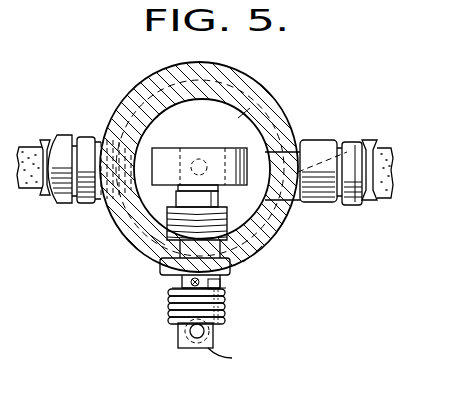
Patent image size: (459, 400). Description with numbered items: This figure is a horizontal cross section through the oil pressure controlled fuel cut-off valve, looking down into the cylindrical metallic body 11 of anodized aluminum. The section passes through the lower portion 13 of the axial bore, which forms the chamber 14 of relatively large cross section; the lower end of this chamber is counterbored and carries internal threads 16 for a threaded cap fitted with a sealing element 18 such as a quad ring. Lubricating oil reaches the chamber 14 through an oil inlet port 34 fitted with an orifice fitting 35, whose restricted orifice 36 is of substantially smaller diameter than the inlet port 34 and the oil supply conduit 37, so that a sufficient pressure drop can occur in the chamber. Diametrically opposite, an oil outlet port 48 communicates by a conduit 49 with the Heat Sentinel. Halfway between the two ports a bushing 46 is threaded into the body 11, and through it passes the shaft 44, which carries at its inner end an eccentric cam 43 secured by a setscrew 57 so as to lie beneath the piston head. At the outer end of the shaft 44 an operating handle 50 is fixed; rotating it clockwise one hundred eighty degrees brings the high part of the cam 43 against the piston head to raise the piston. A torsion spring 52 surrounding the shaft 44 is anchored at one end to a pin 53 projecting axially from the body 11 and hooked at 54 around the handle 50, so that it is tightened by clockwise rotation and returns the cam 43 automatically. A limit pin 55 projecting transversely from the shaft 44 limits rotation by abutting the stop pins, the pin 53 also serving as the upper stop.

The cylindrical metallic body 11 is at (139, 83).
The lower portion of the bore 13 is at (200, 100).
The chamber 14 is at (215, 112).
The internal threads 16 is at (273, 243).
The sealing element 18 is at (277, 229).
The oil inlet port 34 is at (288, 124).
The orifice fitting 35 is at (318, 148).
The restricted orifice 36 is at (348, 148).
The oil supply conduit 37 is at (387, 200).
The eccentric cam 43 is at (172, 160).
The shaft 44 is at (182, 281).
The bushing 46 is at (168, 222).
The oil outlet port 48 is at (122, 113).
The conduit 49 is at (42, 147).
The operating handle 50 is at (178, 334).
The torsion spring 52 is at (170, 306).
The pin 53 is at (228, 279).
The hooked end of spring 54 is at (232, 358).
The limit pin 55 is at (170, 289).
The setscrew 57 is at (238, 118).